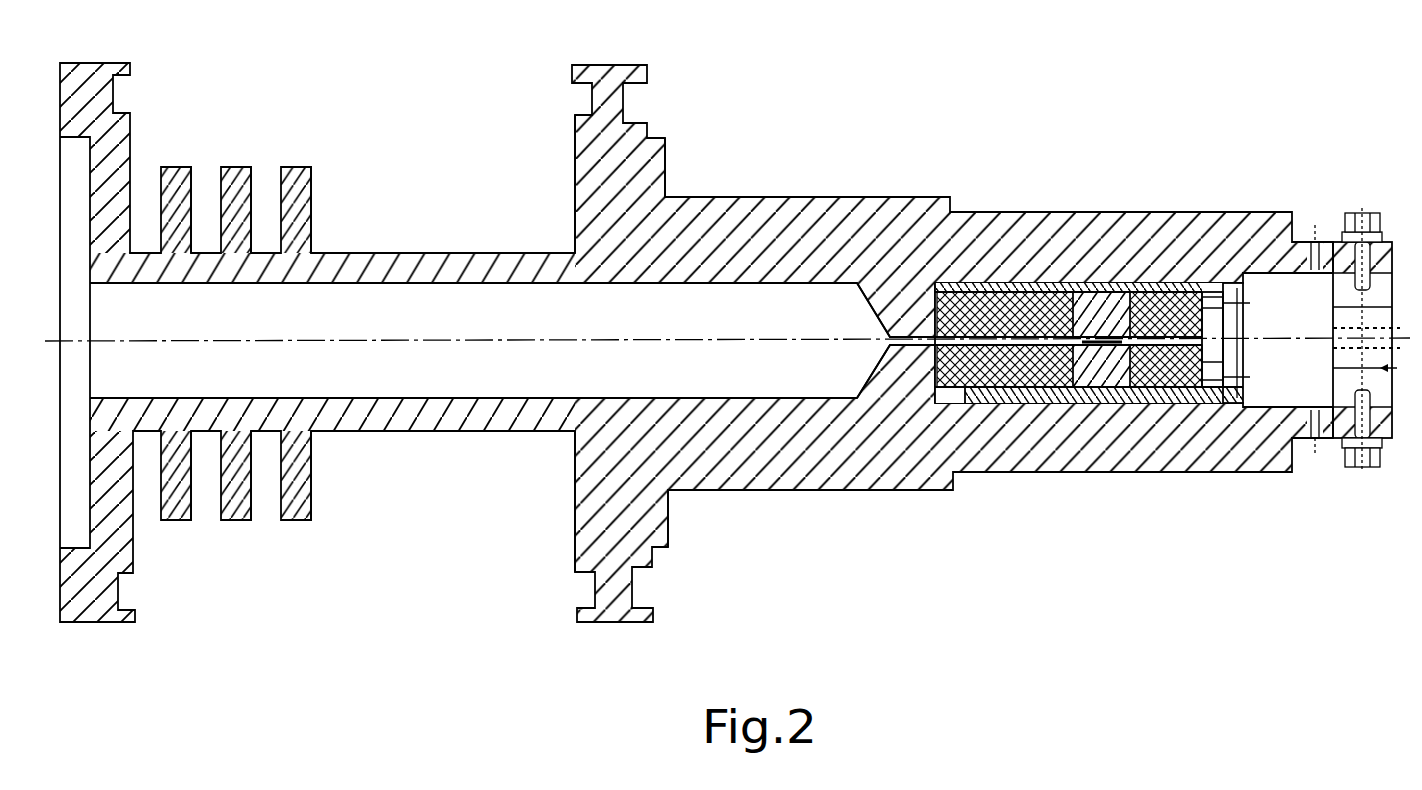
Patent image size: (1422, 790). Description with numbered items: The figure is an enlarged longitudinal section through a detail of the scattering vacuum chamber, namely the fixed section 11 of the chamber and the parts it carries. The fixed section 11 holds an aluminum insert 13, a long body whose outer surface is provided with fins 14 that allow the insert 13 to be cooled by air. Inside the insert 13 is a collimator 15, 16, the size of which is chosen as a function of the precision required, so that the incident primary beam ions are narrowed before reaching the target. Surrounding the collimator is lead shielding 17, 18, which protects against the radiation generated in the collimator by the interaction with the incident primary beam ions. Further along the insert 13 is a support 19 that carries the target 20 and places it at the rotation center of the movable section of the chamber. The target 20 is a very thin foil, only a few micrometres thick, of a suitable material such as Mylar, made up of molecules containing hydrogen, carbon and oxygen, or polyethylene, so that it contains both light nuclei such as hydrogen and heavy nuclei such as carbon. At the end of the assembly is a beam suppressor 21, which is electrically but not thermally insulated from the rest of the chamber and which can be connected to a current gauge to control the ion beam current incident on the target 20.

The fixed section 11 is at (733, 180).
The aluminum insert 13 is at (735, 477).
The fins 14 is at (177, 525).
The collimator 15 is at (902, 341).
The collimator 16 is at (1100, 345).
The lead shielding 17 is at (968, 387).
The lead shielding 18 is at (1145, 388).
The support 19 is at (1233, 397).
The target 20 is at (1235, 330).
The beam suppressor 21 is at (1346, 403).